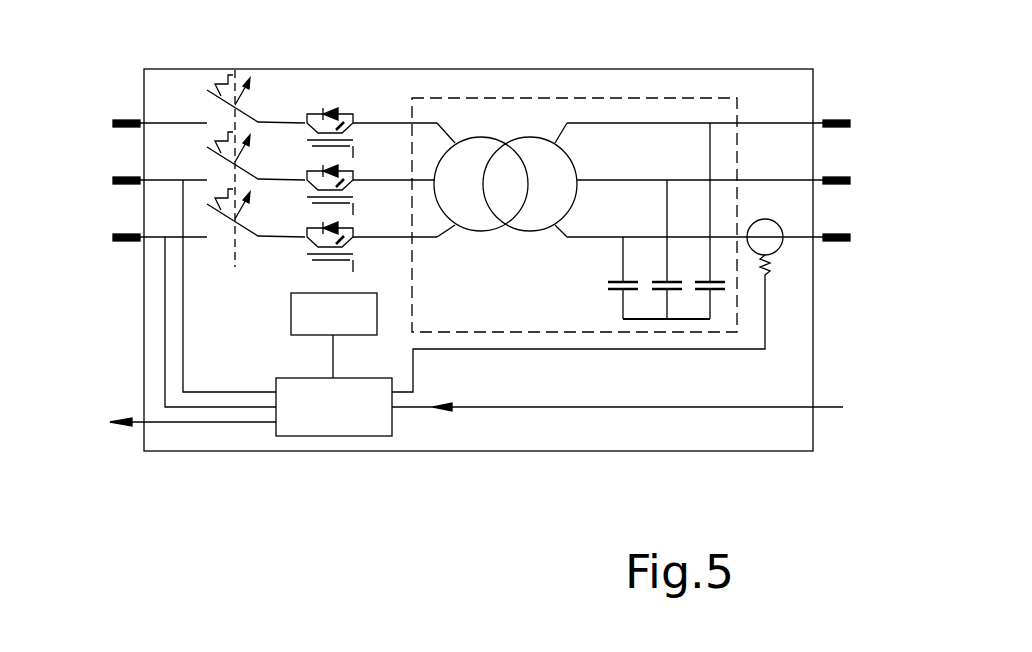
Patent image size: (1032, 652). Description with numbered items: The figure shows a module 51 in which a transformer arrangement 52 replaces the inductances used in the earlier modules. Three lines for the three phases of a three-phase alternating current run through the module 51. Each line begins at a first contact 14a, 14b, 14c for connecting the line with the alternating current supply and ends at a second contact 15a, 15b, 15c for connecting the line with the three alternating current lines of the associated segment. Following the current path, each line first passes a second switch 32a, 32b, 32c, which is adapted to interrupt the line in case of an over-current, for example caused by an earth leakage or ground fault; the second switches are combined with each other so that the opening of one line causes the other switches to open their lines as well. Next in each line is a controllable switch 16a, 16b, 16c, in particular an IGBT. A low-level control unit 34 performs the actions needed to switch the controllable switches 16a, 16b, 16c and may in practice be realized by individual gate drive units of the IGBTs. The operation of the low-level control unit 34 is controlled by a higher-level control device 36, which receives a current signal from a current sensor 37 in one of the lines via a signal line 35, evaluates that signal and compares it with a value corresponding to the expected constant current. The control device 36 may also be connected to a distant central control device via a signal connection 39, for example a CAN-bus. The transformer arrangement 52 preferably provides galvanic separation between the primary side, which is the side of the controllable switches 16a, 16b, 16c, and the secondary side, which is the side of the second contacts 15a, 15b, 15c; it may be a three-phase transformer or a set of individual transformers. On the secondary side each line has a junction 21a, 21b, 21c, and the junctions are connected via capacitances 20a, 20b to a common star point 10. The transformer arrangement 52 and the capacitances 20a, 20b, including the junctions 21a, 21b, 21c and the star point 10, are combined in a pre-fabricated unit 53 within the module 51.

The star point 10 is at (668, 320).
The first contact 14a is at (120, 233).
The first contact 14b is at (120, 177).
The first contact 14c is at (122, 118).
The second contact 15a is at (865, 260).
The second contact 15b is at (865, 203).
The second contact 15c is at (867, 148).
The controllable switch 16a is at (432, 302).
The controllable switch 16b is at (356, 200).
The controllable switch 16c is at (355, 143).
The capacitance 20a is at (610, 290).
The capacitance 20b is at (662, 291).
The junction 21a is at (623, 236).
The junction 21b is at (667, 179).
The junction 21c is at (710, 122).
The second switch 32a is at (248, 225).
The second switch 32b is at (248, 168).
The second switch 32c is at (248, 112).
The low-level control unit 34 is at (291, 317).
The signal line 35 is at (743, 373).
The control device 36 is at (350, 477).
The current sensor 37 is at (835, 298).
The signal connection 39 is at (182, 478).
The module 51 is at (588, 477).
The transformer arrangement 52 is at (480, 258).
The pre-fabricated unit 53 is at (522, 96).